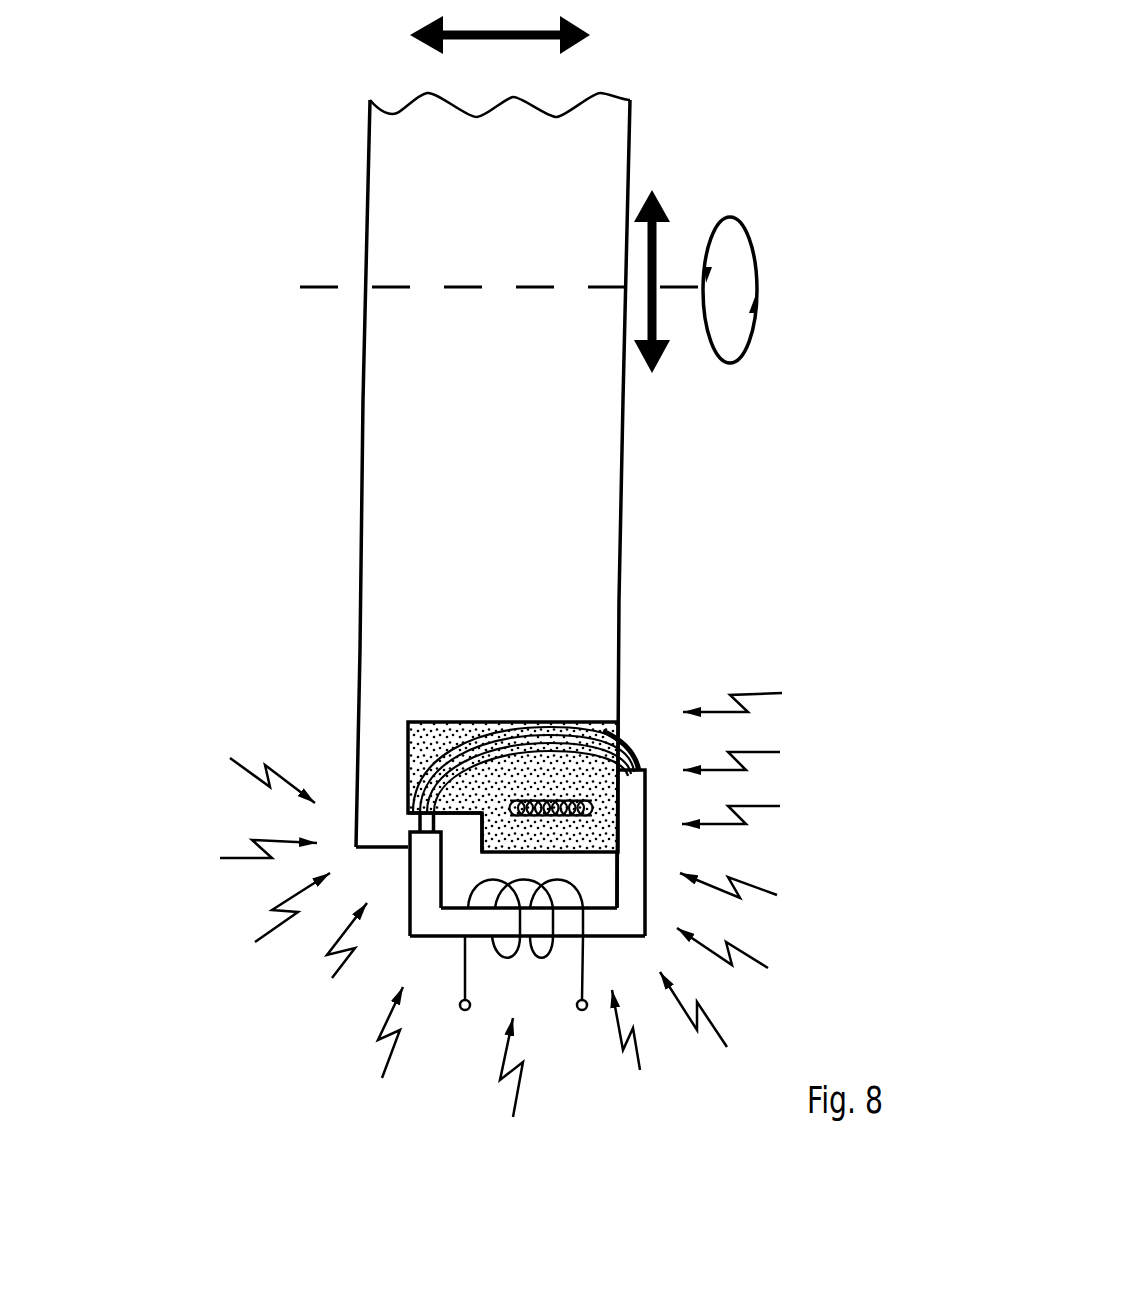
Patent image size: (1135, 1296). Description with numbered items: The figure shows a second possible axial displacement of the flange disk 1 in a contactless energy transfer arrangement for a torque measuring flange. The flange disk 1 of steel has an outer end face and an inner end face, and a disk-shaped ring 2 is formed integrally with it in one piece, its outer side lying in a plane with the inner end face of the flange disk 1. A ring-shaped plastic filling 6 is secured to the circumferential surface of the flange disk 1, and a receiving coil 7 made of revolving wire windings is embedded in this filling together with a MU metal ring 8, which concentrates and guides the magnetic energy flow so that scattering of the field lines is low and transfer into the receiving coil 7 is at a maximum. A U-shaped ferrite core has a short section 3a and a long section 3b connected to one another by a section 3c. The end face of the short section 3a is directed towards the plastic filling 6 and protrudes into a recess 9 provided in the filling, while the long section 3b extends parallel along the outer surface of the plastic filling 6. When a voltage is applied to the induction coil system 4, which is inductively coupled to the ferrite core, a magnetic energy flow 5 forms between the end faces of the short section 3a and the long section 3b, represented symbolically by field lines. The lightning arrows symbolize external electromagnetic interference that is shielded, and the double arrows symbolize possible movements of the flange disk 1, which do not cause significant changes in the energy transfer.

The flange disk 1 is at (600, 555).
The disk-shaped ring 2 is at (382, 790).
The short section 3a is at (422, 880).
The long section 3b is at (630, 853).
The section 3c is at (446, 927).
The induction coil system 4 is at (578, 977).
The magnetic energy flow 5 is at (630, 743).
The ring-shaped plastic filling 6 is at (440, 735).
The receiving coil 7 is at (617, 698).
The MU metal ring 8 is at (430, 760).
The recess 9 is at (468, 817).